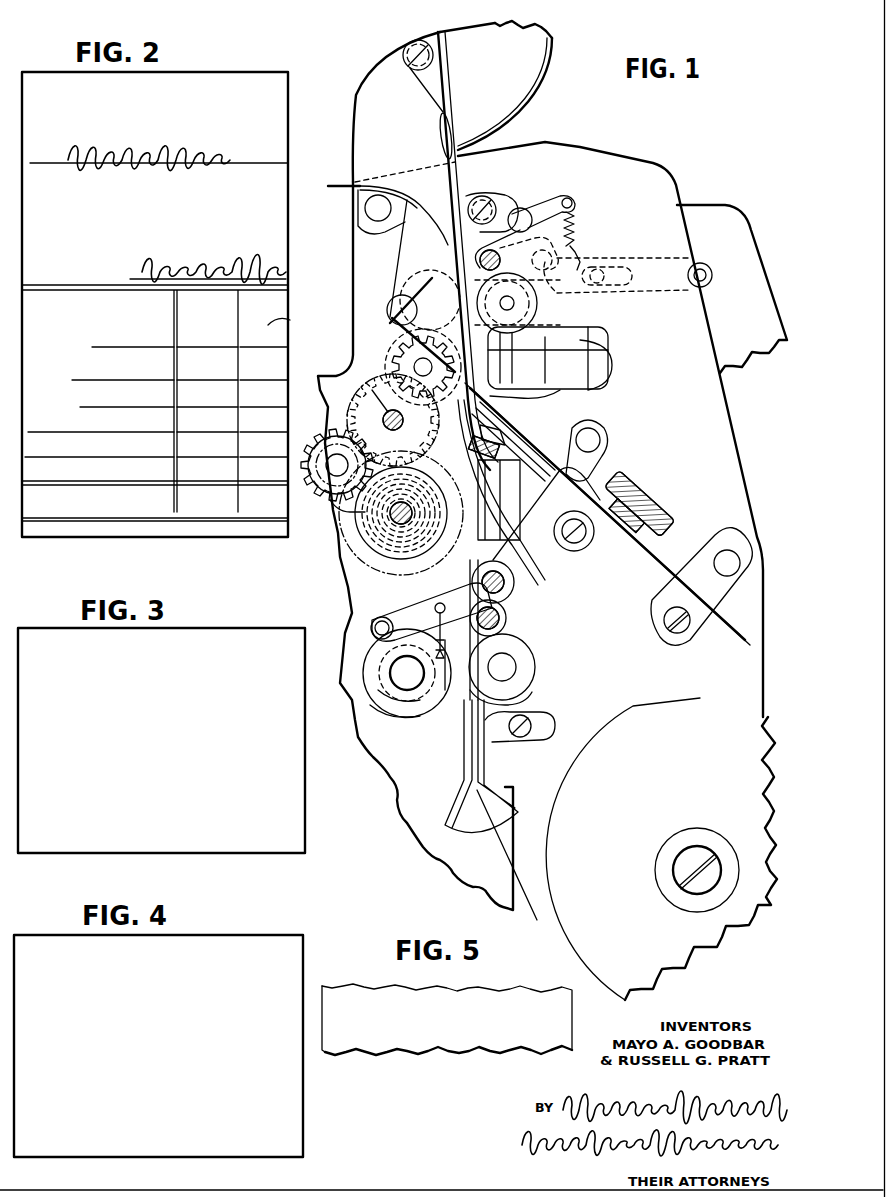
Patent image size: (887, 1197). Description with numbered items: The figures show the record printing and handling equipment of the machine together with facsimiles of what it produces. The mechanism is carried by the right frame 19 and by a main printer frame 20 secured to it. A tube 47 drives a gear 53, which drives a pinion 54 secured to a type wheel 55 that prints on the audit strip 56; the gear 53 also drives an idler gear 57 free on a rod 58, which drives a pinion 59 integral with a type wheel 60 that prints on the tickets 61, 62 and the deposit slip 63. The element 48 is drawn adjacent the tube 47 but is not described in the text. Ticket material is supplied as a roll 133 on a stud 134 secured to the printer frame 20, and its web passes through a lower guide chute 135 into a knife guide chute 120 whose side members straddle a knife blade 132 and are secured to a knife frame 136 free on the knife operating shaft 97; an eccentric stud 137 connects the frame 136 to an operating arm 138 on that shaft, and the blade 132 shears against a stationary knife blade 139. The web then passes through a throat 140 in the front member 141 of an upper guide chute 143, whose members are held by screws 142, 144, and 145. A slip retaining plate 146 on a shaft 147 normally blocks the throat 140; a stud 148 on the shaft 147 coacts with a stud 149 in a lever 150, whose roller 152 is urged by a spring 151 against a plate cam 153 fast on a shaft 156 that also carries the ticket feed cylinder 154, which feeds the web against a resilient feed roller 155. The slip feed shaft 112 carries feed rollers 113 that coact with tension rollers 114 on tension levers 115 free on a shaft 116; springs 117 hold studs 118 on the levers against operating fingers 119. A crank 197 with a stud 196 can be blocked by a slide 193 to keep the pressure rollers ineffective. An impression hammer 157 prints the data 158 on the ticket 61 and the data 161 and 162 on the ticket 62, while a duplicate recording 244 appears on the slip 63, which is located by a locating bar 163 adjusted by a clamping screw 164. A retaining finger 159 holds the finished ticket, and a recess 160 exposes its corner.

In FIG. 1, the right frame 19 is at (745, 234).
In FIG. 1, the main printer frame 20 is at (536, 150).
In FIG. 1, the tube 47 is at (380, 534).
In FIG. 1, the platen shaft 48 is at (400, 525).
In FIG. 1, the gear 53 is at (441, 472).
In FIG. 1, the pinion 54 is at (342, 448).
In FIG. 1, the type wheel 55 is at (339, 517).
In FIG. 5, the audit strip 56 is at (365, 990).
In FIG. 1, the idler gear 57 is at (368, 420).
In FIG. 1, the rod 58 is at (370, 402).
In FIG. 1, the pinion 59 is at (400, 370).
In FIG. 1, the type wheel 60 is at (399, 350).
In FIG. 3, the ticket 61 is at (230, 632).
In FIG. 4, the ticket 62 is at (240, 944).
In FIG. 2, the deposit slip 63 is at (218, 80).
In FIG. 1, the knife operating shaft 97 is at (522, 680).
In FIG. 1, the slip feed shaft 112 is at (397, 309).
In FIG. 1, the feed rollers 113 is at (422, 286).
In FIG. 1, the tension rollers 114 is at (548, 320).
In FIG. 1, the tension lever 115 is at (545, 199).
In FIG. 1, the shaft 116 is at (478, 262).
In FIG. 1, the spring 117 is at (576, 228).
In FIG. 1, the stud 118 is at (517, 206).
In FIG. 1, the operating finger 119 is at (522, 244).
In FIG. 1, the knife guide chute 120 is at (430, 577).
In FIG. 1, the knife blade 132 is at (510, 441).
In FIG. 1, the roll 133 is at (629, 716).
In FIG. 1, the stud 134 is at (679, 840).
In FIG. 1, the lower guide chute 135 is at (477, 771).
In FIG. 1, the knife frame 136 is at (514, 457).
In FIG. 1, the eccentric stud 137 is at (534, 584).
In FIG. 1, the operating arm 138 is at (520, 596).
In FIG. 1, the stationary shearing knife blade 139 is at (476, 449).
In FIG. 1, the throat 140 is at (600, 366).
In FIG. 1, the front member 141 is at (408, 243).
In FIG. 1, the screw 142 is at (388, 318).
In FIG. 1, the upper guide chute 143 is at (376, 68).
In FIG. 1, the screw 144 is at (474, 212).
In FIG. 1, the screw 145 is at (666, 618).
In FIG. 1, the slip retaining plate 146 is at (482, 422).
In FIG. 1, the shaft 147 is at (590, 476).
In FIG. 1, the stud 148 is at (522, 614).
In FIG. 1, the stud 149 is at (580, 542).
In FIG. 1, the lever 150 is at (522, 637).
In FIG. 1, the spring 151 is at (441, 700).
In FIG. 1, the roller 152 is at (370, 625).
In FIG. 1, the plate cam 153 is at (399, 690).
In FIG. 1, the ticket feed cylinder 154 is at (405, 714).
In FIG. 1, the resilient feed roller 155 is at (528, 700).
In FIG. 1, the shaft 156 is at (396, 671).
In FIG. 1, the impression hammer 157 is at (592, 346).
In FIG. 3, the data 158 is at (292, 737).
In FIG. 1, the retaining finger 159 is at (438, 88).
In FIG. 1, the recess 160 is at (535, 53).
In FIG. 4, the data 161 is at (288, 1044).
In FIG. 4, the data 162 is at (283, 958).
In FIG. 1, the locating bar 163 is at (572, 432).
In FIG. 1, the clamping screw 164 is at (640, 503).
In FIG. 1, the slide 193 is at (642, 257).
In FIG. 1, the stud 196 is at (522, 322).
In FIG. 1, the crank 197 is at (576, 244).
In FIG. 2, the duplicate recording 244 is at (284, 324).